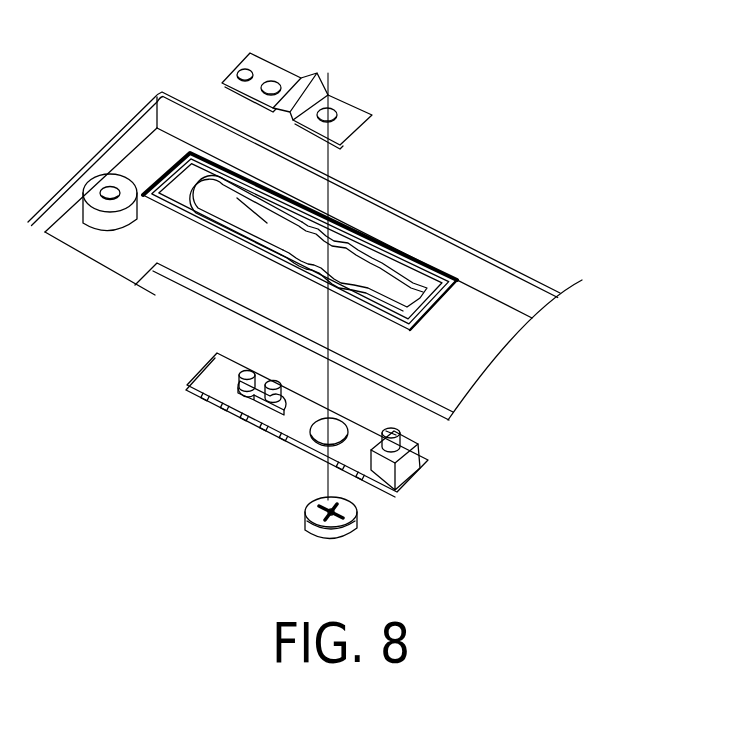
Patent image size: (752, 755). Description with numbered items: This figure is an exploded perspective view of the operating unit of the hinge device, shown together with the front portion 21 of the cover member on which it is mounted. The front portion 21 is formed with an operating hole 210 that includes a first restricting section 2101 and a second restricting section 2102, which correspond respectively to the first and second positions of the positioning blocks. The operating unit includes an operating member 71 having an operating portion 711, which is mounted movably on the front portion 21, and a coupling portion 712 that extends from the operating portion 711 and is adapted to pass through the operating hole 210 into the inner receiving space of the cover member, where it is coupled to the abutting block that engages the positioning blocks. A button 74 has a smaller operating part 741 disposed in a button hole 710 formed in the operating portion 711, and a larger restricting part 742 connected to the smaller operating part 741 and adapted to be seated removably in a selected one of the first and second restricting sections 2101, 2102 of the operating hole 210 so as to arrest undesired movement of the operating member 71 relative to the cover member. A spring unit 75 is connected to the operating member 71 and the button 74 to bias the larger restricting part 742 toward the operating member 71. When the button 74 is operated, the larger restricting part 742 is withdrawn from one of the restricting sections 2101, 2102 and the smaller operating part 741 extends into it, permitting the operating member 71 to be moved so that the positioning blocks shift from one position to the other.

The front portion 21 is at (164, 139).
The operating hole 210 is at (175, 148).
The first restricting section 2101 is at (350, 260).
The second restricting section 2102 is at (308, 243).
The spring unit 75 is at (317, 80).
The operating member 71 is at (357, 438).
The button hole 710 is at (330, 428).
The operating portion 711 is at (292, 438).
The coupling portion 712 is at (413, 452).
The button 74 is at (349, 539).
The smaller operating part 741 is at (338, 542).
The larger restricting part 742 is at (310, 507).